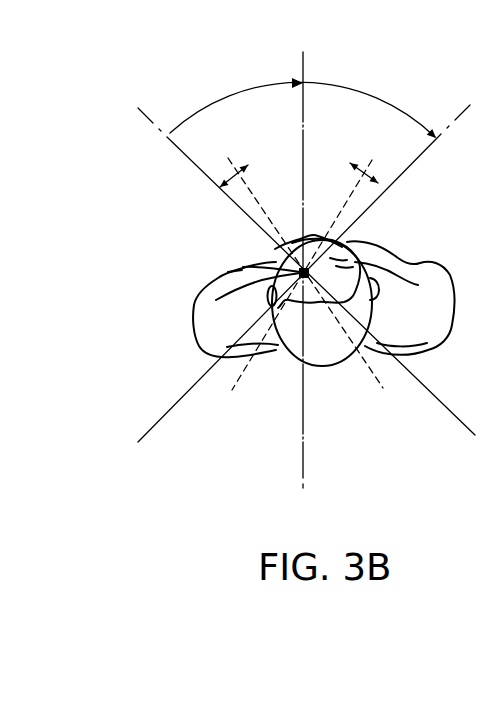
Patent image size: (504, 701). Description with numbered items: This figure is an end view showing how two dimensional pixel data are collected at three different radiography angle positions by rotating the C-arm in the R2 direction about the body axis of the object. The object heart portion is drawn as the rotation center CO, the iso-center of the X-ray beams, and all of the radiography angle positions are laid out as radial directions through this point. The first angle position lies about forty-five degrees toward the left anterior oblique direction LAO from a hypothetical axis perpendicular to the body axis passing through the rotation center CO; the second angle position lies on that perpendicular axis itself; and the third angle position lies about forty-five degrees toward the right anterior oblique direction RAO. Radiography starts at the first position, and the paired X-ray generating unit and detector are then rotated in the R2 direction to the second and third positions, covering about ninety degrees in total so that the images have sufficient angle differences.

The R2 direction R2 is at (303, 102).
The left anterior oblique direction LAO is at (292, 262).
The right anterior oblique direction RAO is at (317, 263).
The rotation center CO is at (276, 265).